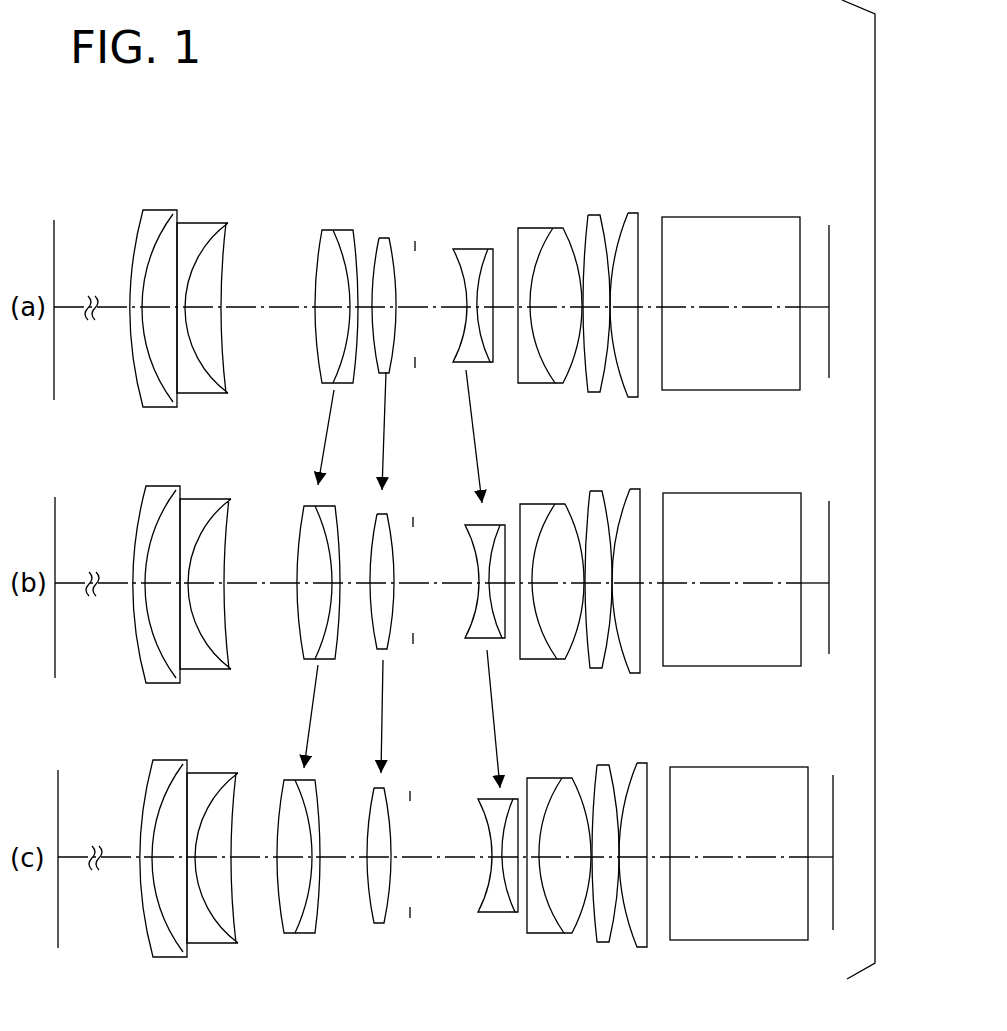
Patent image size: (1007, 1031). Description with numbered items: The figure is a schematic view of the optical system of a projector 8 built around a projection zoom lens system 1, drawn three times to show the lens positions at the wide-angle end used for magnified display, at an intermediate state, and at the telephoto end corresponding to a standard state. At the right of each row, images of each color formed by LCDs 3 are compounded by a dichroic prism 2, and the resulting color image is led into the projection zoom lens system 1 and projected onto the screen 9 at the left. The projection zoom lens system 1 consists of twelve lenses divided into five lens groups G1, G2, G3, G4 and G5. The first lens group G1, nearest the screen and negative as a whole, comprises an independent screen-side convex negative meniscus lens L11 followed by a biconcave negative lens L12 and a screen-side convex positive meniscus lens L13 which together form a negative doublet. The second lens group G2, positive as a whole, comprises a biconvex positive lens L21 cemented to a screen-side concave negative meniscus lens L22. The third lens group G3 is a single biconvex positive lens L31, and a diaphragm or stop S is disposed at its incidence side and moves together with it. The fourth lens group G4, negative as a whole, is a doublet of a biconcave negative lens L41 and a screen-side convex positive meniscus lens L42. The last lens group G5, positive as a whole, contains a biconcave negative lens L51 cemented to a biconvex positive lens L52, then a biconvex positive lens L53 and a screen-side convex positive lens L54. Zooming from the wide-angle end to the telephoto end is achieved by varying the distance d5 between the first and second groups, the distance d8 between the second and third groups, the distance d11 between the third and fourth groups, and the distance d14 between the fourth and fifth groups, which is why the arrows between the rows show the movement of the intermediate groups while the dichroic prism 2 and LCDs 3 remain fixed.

The projection zoom lens system 1 is at (121, 227).
The dichroic prism 2 is at (742, 230).
The LCD 3 is at (828, 242).
The projector 8 is at (739, 100).
The screen 9 is at (56, 253).
The diaphragm (stop) S is at (418, 246).
The first lens group G1 is at (247, 140).
The second lens group G2 is at (362, 140).
The third lens group G3 is at (416, 138).
The fourth lens group G4 is at (532, 128).
The fifth lens group G5 is at (715, 103).
The screen side convex negative power meniscus lens L11 is at (160, 222).
The biconcave negative lens L12 is at (200, 228).
The screen side convex positive meniscus lens L13 is at (232, 225).
The biconvex positive lens L21 is at (325, 233).
The screen side concave negative meniscus lens L22 is at (348, 232).
The biconvex positive lens L31 is at (382, 237).
The biconcave negative lens L41 is at (466, 262).
The screen side convex positive meniscus lens L42 is at (492, 250).
The biconcave negative lens L51 is at (535, 232).
The biconvex positive lens L52 is at (559, 233).
The biconvex positive lens L53 is at (593, 226).
The screen side convex positive lens L54 is at (633, 220).
The distance between the first and second lens groups d5 is at (273, 309).
The distance between the second and third lens groups d8 is at (363, 372).
The distance between the third and fourth lens groups d11 is at (437, 309).
The distance between the fourth and fifth lens groups d14 is at (508, 309).